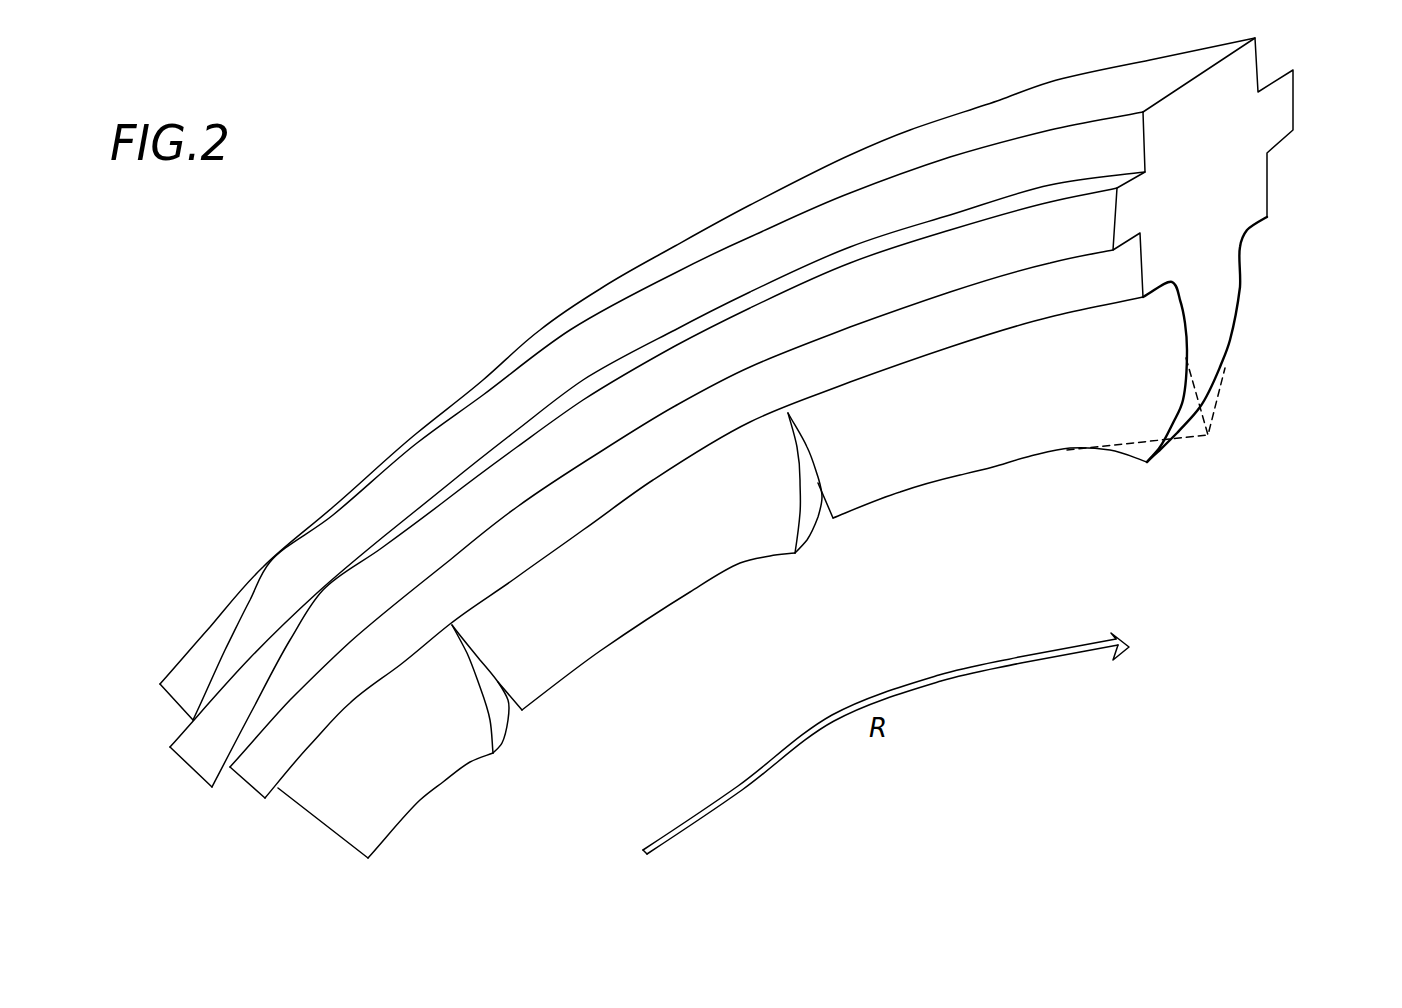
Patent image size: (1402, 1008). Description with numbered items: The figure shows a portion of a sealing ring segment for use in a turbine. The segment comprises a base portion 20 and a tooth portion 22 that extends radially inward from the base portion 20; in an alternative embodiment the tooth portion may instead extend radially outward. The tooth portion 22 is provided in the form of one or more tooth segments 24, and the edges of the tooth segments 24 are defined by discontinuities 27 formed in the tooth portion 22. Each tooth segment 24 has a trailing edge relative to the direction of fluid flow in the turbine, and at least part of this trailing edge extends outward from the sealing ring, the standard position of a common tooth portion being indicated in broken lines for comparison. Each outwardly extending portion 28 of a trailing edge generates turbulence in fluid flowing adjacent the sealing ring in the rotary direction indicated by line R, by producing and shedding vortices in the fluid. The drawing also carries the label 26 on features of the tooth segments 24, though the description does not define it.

The base portion 20 is at (1255, 180).
The tooth portion 22 is at (958, 519).
The tooth segments 24 is at (385, 810).
The hydrodynamic groove 26 is at (487, 720).
The discontinuities 27 is at (516, 726).
The outwardly extending portion 28 is at (477, 743).